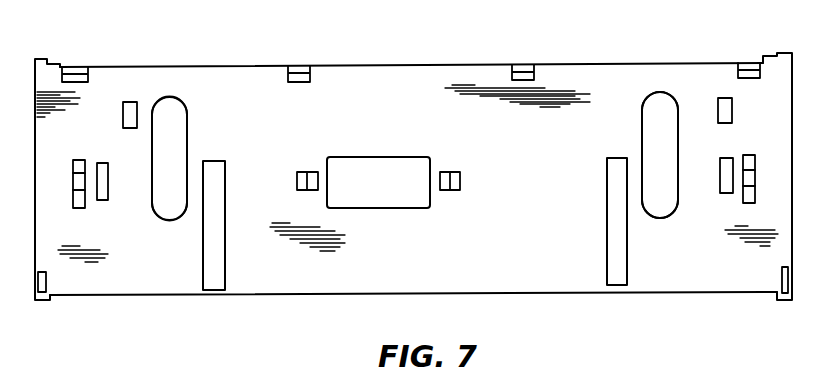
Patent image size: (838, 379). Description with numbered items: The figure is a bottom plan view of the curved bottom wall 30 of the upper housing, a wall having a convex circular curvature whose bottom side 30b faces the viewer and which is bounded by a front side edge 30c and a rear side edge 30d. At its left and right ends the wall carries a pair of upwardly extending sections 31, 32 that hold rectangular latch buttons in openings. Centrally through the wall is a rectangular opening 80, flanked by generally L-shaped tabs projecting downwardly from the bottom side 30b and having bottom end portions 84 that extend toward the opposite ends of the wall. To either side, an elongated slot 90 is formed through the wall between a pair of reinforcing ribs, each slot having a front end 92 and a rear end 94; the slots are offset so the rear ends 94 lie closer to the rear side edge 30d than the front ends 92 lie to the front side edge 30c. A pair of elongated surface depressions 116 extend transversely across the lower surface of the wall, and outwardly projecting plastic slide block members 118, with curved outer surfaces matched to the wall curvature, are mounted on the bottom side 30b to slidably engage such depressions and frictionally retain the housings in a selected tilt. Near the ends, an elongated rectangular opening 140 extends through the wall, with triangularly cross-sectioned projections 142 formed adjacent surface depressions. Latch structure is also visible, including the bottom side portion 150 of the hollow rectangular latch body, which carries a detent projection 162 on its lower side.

The bottom wall 30 is at (386, 64).
The bottom side 30b is at (447, 259).
The front side edge 30c is at (547, 294).
The rear side edge 30d is at (450, 64).
The upwardly extending section 31 is at (792, 248).
The upwardly extending section 32 is at (38, 290).
The rectangular opening 80 is at (389, 162).
The bottom end portions 84 is at (310, 172).
The elongated slot 90 is at (187, 125).
The front end 92 is at (165, 221).
The rear end 94 is at (170, 96).
The elongated surface depressions 116 is at (225, 258).
The slide block members 118 is at (123, 111).
The elongated rectangular opening 140 is at (755, 190).
The triangularly cross-sectioned projections 142 is at (73, 198).
The bottom side portion 150 is at (78, 160).
The detent projection 162 is at (73, 174).